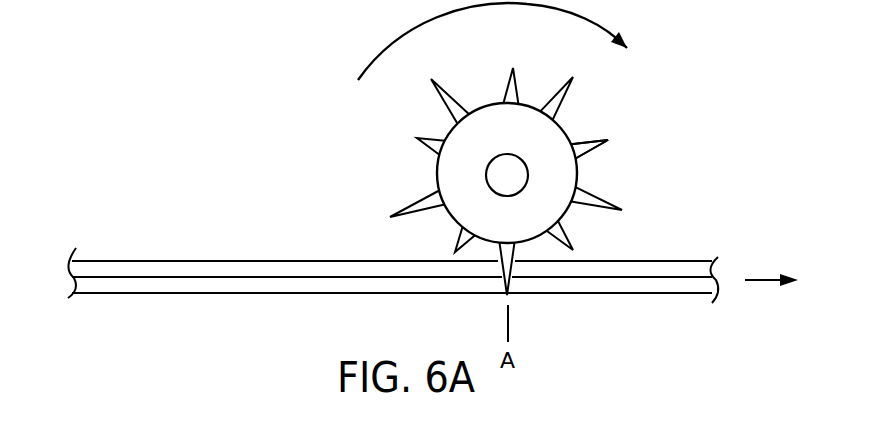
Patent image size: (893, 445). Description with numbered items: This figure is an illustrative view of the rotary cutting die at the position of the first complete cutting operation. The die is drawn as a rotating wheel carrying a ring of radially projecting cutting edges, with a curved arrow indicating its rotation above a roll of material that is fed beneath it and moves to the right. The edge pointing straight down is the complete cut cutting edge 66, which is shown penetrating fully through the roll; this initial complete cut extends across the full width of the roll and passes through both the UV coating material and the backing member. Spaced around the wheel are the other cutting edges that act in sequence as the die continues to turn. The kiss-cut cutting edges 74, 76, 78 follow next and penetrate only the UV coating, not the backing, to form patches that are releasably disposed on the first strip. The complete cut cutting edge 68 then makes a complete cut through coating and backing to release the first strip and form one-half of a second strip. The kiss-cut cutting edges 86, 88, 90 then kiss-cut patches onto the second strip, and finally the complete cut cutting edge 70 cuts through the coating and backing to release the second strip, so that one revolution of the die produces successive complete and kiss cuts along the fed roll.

The complete cut cutting edge 66 is at (513, 270).
The complete cut cutting edge 68 is at (603, 196).
The complete cut cutting edge 70 is at (573, 78).
The kiss-cut cutting edge 74 is at (631, 235).
The kiss-cut cutting edge 76 is at (631, 235).
The kiss-cut cutting edge 78 is at (574, 249).
The kiss-cut cutting edge 86 is at (662, 142).
The kiss-cut cutting edge 88 is at (662, 142).
The kiss-cut cutting edge 90 is at (609, 141).